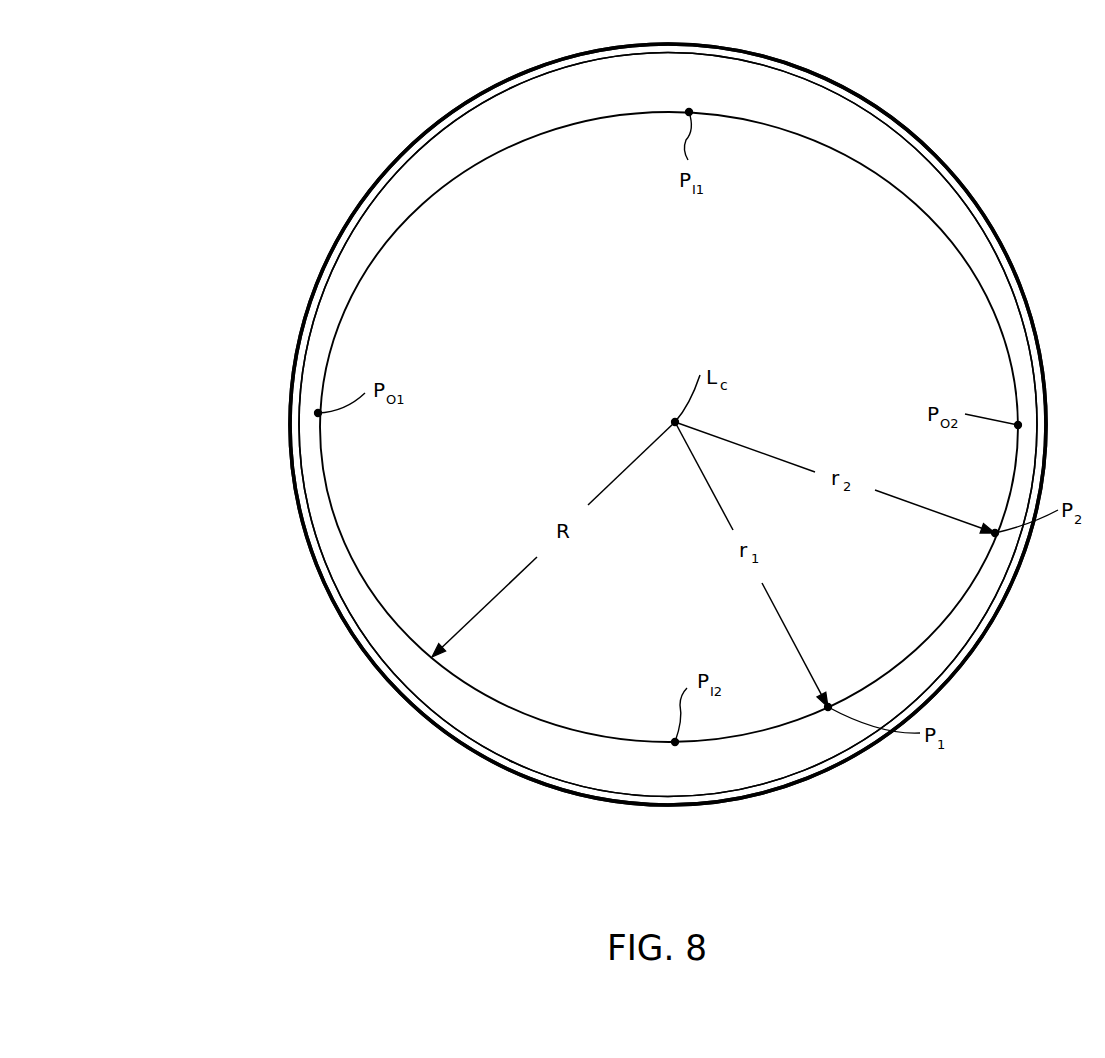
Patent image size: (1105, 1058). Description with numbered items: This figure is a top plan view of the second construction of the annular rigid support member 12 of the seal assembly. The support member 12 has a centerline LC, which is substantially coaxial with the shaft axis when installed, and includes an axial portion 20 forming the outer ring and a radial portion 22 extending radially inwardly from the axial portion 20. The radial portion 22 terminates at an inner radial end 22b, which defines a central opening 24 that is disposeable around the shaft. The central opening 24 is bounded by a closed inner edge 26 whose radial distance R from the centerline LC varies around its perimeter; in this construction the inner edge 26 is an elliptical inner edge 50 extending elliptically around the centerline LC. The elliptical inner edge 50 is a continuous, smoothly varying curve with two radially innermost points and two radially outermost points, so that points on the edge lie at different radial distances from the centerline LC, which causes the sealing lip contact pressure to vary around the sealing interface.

The annular rigid support member 12 is at (274, 189).
The axial portion 20 is at (970, 157).
The radial portion 22 is at (882, 119).
The inner radial end 22b is at (978, 268).
The central opening 24 is at (387, 485).
The inner edge 26 is at (488, 177).
The elliptical inner edge 50 is at (353, 565).